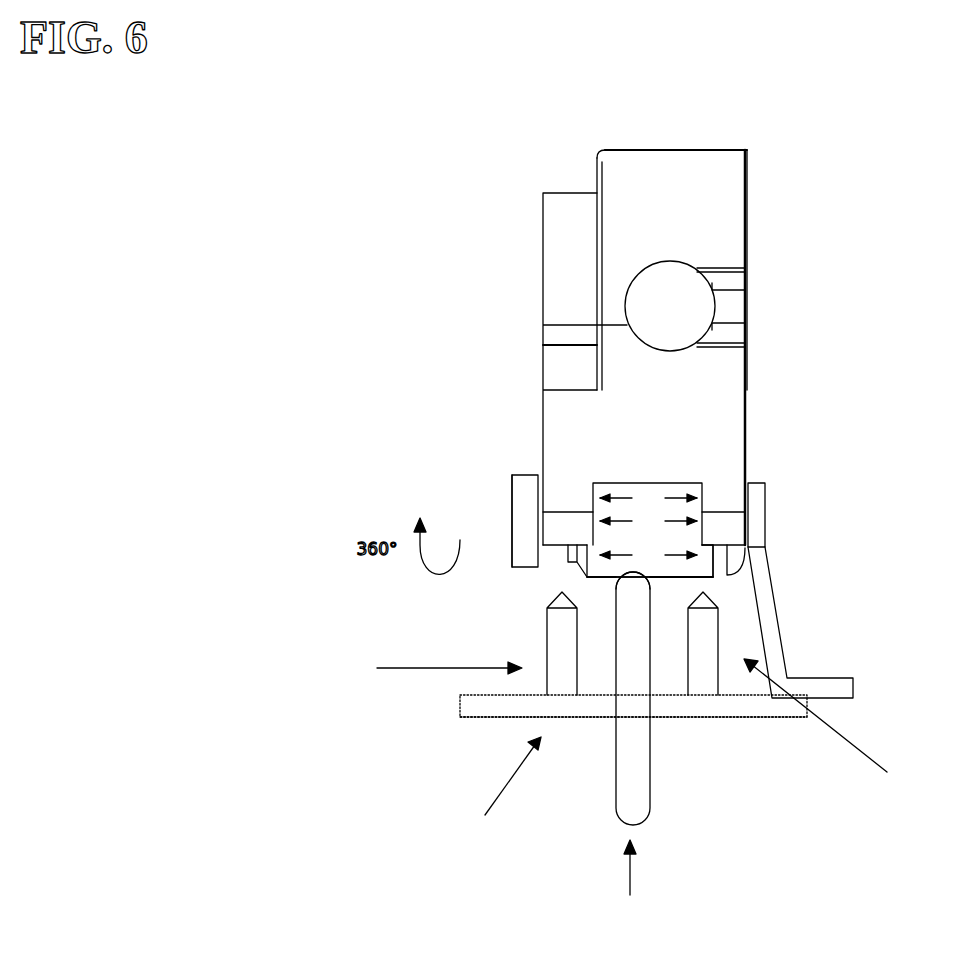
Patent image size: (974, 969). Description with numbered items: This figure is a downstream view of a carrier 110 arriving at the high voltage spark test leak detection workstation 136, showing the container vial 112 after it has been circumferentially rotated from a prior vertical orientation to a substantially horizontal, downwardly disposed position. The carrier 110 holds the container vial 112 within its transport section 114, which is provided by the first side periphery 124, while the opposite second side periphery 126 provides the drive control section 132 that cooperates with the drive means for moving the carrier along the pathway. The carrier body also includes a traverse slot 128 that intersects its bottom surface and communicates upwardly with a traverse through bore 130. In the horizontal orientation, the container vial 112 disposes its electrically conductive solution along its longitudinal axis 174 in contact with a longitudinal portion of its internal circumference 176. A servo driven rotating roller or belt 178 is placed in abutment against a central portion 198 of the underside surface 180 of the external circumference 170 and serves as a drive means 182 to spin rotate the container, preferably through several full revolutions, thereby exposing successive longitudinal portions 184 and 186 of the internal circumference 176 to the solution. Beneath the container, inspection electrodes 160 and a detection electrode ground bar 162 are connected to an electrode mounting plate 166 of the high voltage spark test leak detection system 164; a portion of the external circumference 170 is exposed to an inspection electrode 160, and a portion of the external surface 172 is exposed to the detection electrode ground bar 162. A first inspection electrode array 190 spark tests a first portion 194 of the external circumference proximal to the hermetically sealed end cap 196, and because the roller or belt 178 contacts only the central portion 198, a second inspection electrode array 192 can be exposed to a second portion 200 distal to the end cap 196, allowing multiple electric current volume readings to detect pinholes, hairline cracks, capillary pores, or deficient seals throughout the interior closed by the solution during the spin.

The carrier 110 is at (720, 363).
The second side periphery 126 is at (687, 192).
The drive control section 132 is at (597, 180).
The traverse through bore 130 is at (677, 295).
The traverse slot 128 is at (732, 307).
The first side periphery 124 is at (708, 420).
The transport section 114 is at (575, 533).
The first portion of the external circumference 194 is at (552, 553).
The hermetically sealed end cap 196 is at (520, 522).
The internal circumference 176 is at (732, 557).
The external surface 172 is at (705, 567).
The detection electrode ground bar 162 is at (748, 553).
The container vial 112 is at (707, 575).
The second portion of the external circumference 200 is at (710, 578).
The successive longitudinal portion of the internal circumference 186 is at (648, 497).
The successive longitudinal portion of the internal circumference 184 is at (648, 521).
The longitudinal axis 174 is at (648, 555).
The external circumference 170 is at (587, 577).
The inspection electrode 160 is at (553, 633).
The servo driven rotating roller or belt 178 is at (640, 793).
The underside surface 180 is at (618, 583).
The central portion of the underside surface 198 is at (650, 577).
The electrode mounting plate 166 is at (460, 713).
The high voltage spark test leak detection system 164 is at (485, 713).
The first inspection electrode array 190 is at (432, 666).
The high voltage spark test leak detection workstation 136 is at (497, 786).
The second inspection electrode array 192 is at (832, 724).
The drive means 182 is at (636, 882).